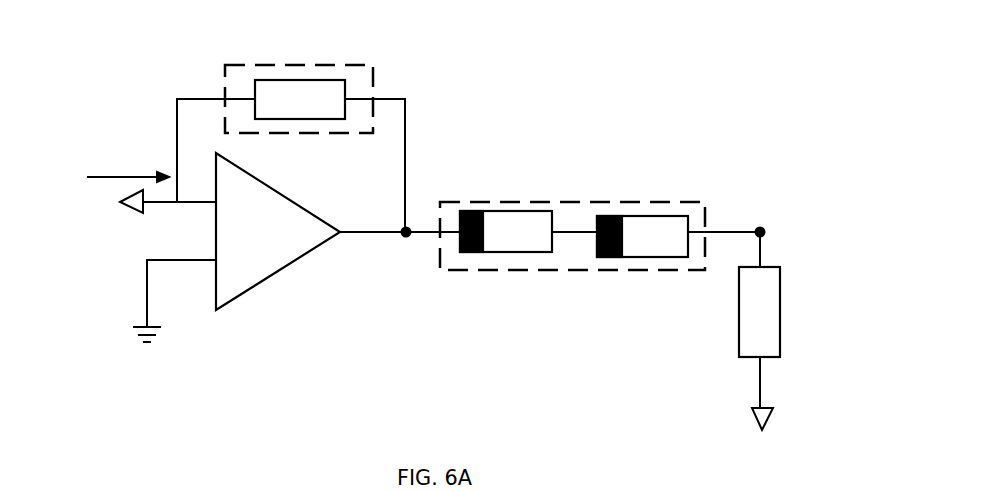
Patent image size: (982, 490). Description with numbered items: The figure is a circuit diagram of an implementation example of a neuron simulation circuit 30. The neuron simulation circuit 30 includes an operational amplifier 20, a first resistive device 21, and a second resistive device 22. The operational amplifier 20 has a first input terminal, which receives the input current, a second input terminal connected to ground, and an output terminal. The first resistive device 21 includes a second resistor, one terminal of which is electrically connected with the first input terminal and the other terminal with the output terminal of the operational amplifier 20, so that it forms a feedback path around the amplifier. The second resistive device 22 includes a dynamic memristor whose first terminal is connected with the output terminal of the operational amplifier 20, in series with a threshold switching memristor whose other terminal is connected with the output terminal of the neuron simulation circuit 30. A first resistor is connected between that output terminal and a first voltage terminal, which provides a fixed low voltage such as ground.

The operational amplifier 20 is at (278, 231).
The first resistive device 21 is at (343, 65).
The second resistive device 22 is at (683, 202).
The neuron simulation circuit 30 is at (481, 30).